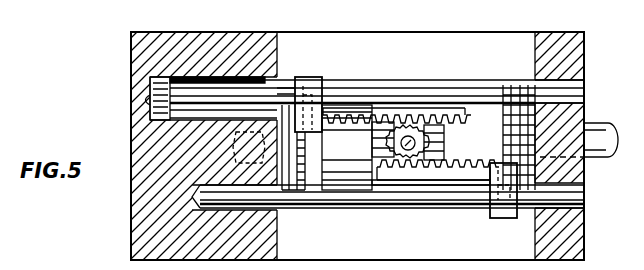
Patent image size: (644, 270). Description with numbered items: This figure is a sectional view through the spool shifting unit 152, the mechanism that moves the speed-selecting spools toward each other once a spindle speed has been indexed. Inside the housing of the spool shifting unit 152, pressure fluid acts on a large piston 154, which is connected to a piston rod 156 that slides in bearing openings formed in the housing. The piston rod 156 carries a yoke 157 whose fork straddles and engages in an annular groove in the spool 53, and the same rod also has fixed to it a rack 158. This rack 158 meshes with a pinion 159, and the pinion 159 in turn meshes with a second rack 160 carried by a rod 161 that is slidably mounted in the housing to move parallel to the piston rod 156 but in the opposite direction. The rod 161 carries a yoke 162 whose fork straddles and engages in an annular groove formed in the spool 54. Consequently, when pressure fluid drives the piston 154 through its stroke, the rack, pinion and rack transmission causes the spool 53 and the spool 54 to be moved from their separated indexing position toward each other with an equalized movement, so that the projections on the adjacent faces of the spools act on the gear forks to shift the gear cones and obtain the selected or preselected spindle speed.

The spool shifting unit 152 is at (163, 228).
The large piston 154 is at (131, 131).
The piston rod 156 is at (280, 92).
The yoke 157 is at (310, 86).
The rack 158 is at (432, 112).
The pinion 159 is at (440, 105).
The spool 53 is at (340, 163).
The rack 160 is at (418, 180).
The rod 161 is at (385, 207).
The spool 54 is at (470, 205).
The yoke 162 is at (507, 218).